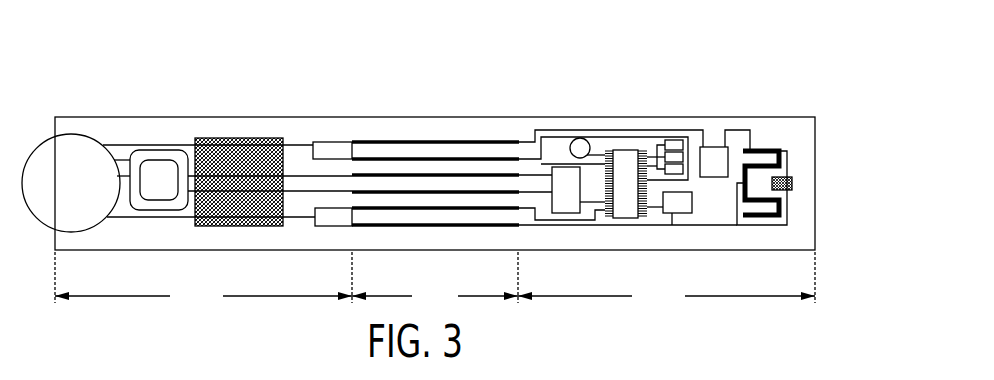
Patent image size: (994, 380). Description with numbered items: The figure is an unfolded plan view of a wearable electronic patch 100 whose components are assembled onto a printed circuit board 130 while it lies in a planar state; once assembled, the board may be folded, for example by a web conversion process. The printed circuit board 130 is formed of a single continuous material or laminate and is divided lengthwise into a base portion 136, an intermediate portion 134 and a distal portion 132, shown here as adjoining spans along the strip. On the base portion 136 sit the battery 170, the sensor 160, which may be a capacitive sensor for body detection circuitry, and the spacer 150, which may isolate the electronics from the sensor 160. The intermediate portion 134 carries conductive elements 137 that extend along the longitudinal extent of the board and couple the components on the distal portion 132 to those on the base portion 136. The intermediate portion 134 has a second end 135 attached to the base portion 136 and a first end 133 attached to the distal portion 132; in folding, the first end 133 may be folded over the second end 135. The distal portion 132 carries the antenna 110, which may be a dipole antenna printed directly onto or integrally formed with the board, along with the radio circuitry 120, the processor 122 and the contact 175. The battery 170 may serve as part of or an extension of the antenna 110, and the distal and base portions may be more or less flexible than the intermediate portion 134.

The wearable electronic patch 100 is at (728, 42).
The battery 170 is at (54, 194).
The sensor 160 is at (148, 151).
The spacer 150 is at (222, 138).
The printed circuit board 130 is at (421, 134).
The conductive elements 137 is at (461, 141).
The second end 135 is at (353, 112).
The first end 133 is at (517, 112).
The base portion 136 is at (203, 295).
The intermediate portion 134 is at (435, 295).
The distal portion 132 is at (666, 295).
The processor 122 is at (623, 218).
The radio circuitry 120 is at (717, 147).
The antenna 110 is at (770, 218).
The contact 175 is at (790, 177).